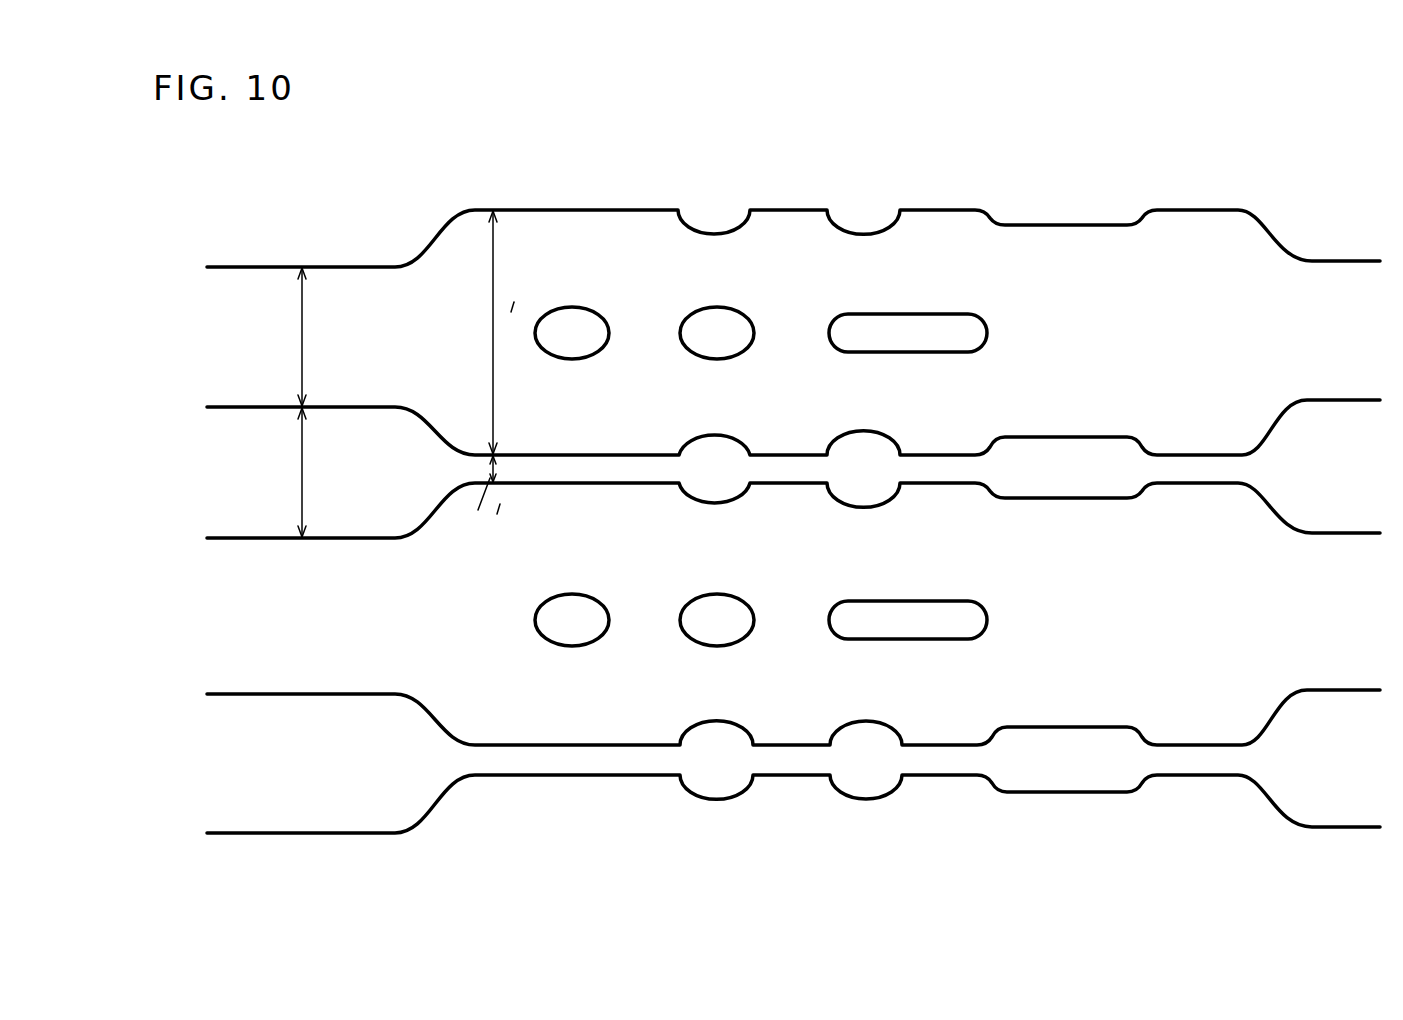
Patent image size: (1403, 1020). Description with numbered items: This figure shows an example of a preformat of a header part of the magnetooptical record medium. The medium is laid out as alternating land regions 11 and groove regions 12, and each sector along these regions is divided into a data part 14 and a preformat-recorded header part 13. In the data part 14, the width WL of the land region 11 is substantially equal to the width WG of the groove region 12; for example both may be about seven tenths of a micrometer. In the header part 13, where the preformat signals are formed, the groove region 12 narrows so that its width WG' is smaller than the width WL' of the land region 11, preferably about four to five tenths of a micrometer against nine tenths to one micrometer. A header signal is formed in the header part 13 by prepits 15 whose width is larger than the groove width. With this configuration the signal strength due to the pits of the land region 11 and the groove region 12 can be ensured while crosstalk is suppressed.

The land region 11 is at (232, 275).
The groove region 12 is at (230, 522).
The header part 13 is at (643, 222).
The data part 14 is at (364, 275).
The prepit 15 is at (733, 448).